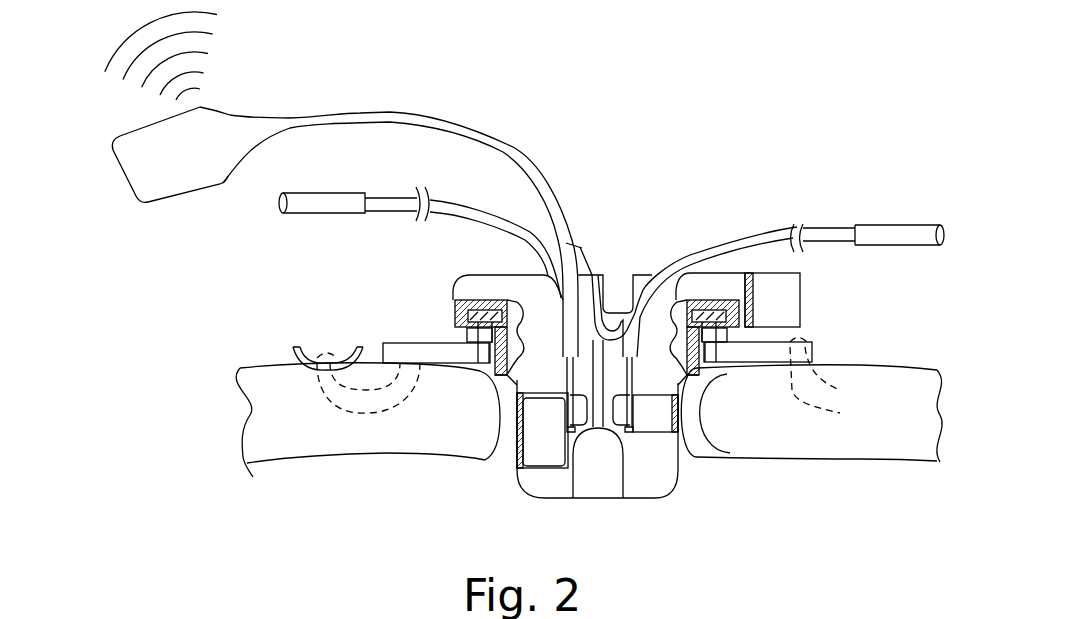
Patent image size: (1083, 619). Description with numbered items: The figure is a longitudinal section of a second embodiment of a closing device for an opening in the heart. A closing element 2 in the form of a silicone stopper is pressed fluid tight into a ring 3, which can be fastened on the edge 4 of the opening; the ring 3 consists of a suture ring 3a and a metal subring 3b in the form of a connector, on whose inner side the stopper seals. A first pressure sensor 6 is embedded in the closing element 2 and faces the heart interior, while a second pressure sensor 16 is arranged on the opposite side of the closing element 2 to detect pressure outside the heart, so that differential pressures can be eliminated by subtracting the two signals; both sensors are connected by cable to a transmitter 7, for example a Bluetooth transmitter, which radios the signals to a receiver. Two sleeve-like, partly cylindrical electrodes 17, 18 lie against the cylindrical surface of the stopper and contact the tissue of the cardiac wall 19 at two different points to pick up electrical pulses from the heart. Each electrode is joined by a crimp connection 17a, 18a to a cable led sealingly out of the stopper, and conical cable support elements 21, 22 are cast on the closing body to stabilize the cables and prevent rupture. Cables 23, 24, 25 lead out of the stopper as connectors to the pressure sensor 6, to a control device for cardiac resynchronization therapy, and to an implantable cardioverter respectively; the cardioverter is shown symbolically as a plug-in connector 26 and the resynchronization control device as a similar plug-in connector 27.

The closing element 2 is at (683, 483).
The ring 3 is at (444, 324).
The suture ring 3a is at (387, 341).
The metal subring 3b is at (497, 300).
The edge of opening 4 is at (358, 342).
The pressure sensor 6 is at (605, 480).
The transmitter 7 is at (222, 122).
The second pressure sensor 16 is at (616, 287).
The electrode 17 is at (540, 447).
The crimp connection 17a is at (568, 428).
The electrode 18 is at (672, 440).
The crimp connection 18a is at (633, 415).
The cardiac wall 19 is at (357, 442).
The cable support element 21 is at (580, 270).
The cable support element 22 is at (670, 253).
The cable 23 is at (513, 147).
The cable 24 is at (832, 227).
The cable 25 is at (488, 210).
The plug-in connector 26 is at (303, 215).
The plug-in connector 27 is at (895, 248).